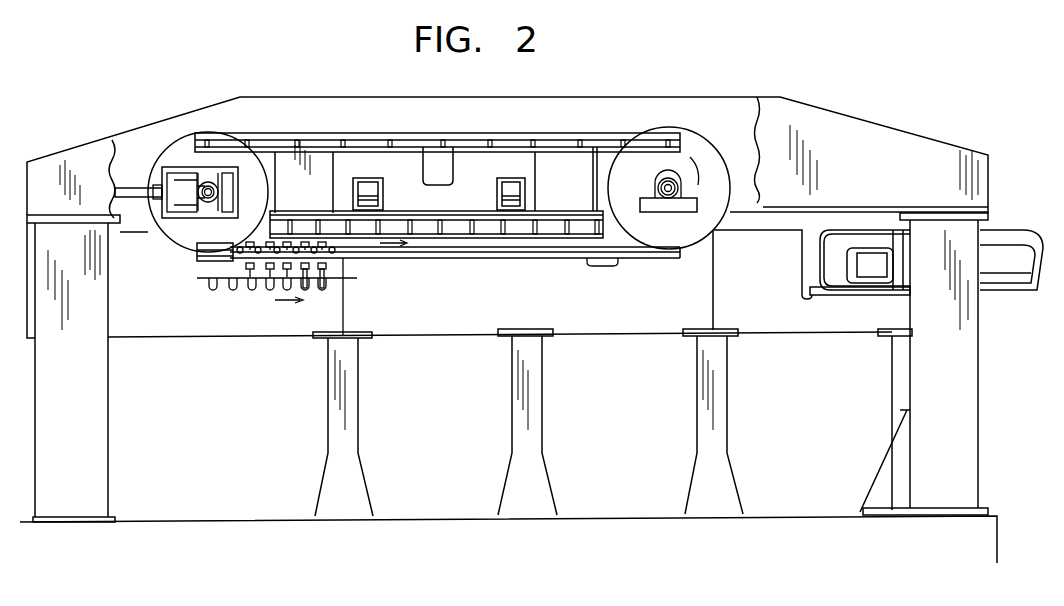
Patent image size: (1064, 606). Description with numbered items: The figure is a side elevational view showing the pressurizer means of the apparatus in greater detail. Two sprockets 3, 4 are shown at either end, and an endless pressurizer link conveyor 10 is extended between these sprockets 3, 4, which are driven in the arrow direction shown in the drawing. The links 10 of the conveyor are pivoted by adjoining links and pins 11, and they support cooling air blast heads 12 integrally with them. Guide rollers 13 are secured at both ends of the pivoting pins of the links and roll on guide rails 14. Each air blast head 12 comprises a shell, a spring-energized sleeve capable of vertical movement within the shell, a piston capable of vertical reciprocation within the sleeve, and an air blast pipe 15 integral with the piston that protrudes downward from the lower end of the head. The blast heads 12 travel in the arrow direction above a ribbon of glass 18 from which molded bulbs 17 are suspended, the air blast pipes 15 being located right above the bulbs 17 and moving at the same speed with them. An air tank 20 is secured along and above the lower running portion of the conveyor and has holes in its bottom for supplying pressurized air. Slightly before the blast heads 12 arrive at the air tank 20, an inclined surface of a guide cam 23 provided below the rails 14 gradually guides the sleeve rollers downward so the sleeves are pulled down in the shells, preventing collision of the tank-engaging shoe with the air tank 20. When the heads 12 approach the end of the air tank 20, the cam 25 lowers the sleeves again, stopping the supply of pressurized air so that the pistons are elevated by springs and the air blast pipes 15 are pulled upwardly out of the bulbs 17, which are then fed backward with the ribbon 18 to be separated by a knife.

The sprocket 3 is at (167, 158).
The sprocket 4 is at (708, 155).
The pressurizer link conveyor 10 is at (310, 133).
The pin 11 is at (295, 248).
The cooling air blast head 12 is at (332, 240).
The guide roller 13 is at (340, 256).
The guide rail 14 is at (233, 260).
The air blast pipe 15 is at (336, 282).
The molded bulb 17 is at (214, 291).
The ribbon of glass 18 is at (234, 291).
The air tank 20 is at (390, 228).
The guide cam 23 is at (262, 282).
The cam 25 is at (600, 267).